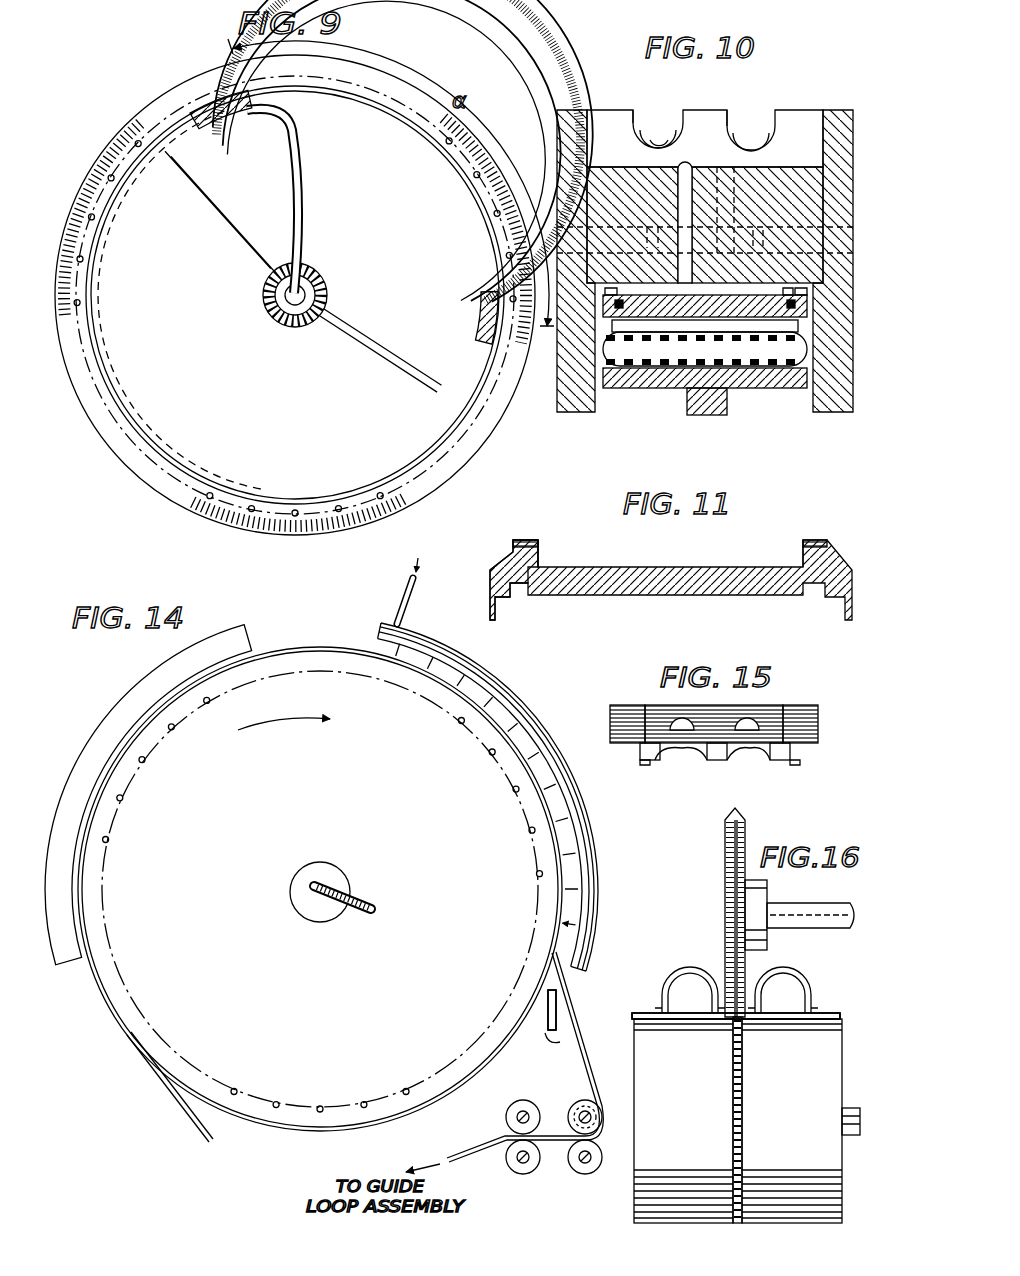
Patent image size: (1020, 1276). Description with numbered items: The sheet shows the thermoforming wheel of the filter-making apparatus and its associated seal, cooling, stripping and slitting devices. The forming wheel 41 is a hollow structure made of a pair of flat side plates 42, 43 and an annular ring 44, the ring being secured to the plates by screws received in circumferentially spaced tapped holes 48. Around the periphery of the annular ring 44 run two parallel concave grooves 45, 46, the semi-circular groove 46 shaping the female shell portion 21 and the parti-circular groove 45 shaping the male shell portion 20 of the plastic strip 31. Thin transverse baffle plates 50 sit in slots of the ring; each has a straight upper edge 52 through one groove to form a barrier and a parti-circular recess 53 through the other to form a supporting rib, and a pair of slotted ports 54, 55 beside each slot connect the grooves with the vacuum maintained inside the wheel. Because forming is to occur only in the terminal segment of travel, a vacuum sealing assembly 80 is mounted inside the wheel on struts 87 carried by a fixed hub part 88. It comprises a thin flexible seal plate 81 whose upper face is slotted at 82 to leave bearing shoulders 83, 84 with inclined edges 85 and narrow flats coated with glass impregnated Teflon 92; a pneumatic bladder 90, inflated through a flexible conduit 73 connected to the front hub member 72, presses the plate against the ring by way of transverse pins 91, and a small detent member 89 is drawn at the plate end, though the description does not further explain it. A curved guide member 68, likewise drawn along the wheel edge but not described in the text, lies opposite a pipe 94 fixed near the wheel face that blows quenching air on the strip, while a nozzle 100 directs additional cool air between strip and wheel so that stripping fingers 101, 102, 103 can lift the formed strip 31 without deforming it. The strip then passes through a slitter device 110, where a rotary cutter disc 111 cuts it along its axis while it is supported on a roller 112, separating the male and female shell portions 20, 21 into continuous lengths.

In FIG. 9, the annular ring 44 is at (165, 93).
In FIG. 10, the annular ring 44 is at (797, 110).
In FIG. 9, the seal plate 81 is at (252, 98).
In FIG. 10, the seal plate 81 is at (603, 312).
In FIG. 11, the seal plate 81 is at (722, 567).
In FIG. 9, the struts 87 is at (238, 208).
In FIG. 10, the struts 87 is at (705, 415).
In FIG. 9, the flexible conduit 73 is at (303, 219).
In FIG. 14, the flexible conduit 73 is at (352, 915).
In FIG. 9, the fixed hub part 88 is at (327, 285).
In FIG. 9, the pneumatic bladder 90 is at (482, 318).
In FIG. 10, the pneumatic bladder 90 is at (741, 390).
In FIG. 9, the vacuum sealing assembly 80 is at (158, 362).
In FIG. 10, the side plate 42 is at (569, 110).
In FIG. 15, the side plate 42 is at (818, 712).
In FIG. 10, the side plate 43 is at (836, 110).
In FIG. 15, the side plate 43 is at (610, 712).
In FIG. 10, the baffle plates 50 is at (626, 114).
In FIG. 10, the parti-circular recess 53 is at (668, 140).
In FIG. 10, the straight upper edge 52 is at (748, 128).
In FIG. 10, the groove 45 is at (640, 144).
In FIG. 10, the groove 46 is at (760, 144).
In FIG. 10, the slotted port 54 is at (689, 186).
In FIG. 10, the tapped holes 48 is at (652, 226).
In FIG. 10, the slotted port 55 is at (733, 219).
In FIG. 10, the inclined edges 85 is at (805, 290).
In FIG. 11, the inclined edges 85 is at (508, 557).
In FIG. 10, the bearing shoulder 83 is at (630, 292).
In FIG. 11, the bearing shoulder 83 is at (546, 557).
In FIG. 10, the bearing shoulder 84 is at (772, 292).
In FIG. 11, the bearing shoulder 84 is at (803, 560).
In FIG. 10, the detent 89 is at (797, 304).
In FIG. 10, the slot 82 is at (673, 300).
In FIG. 10, the transverse pins 91 is at (760, 333).
In FIG. 11, the glass impregnated Teflon layer 92 is at (522, 540).
In FIG. 14, the guide band 68 is at (128, 708).
In FIG. 14, the pipe 94 is at (497, 683).
In FIG. 14, the forming wheel 41 is at (333, 815).
In FIG. 14, the hub member 72 is at (306, 914).
In FIG. 14, the nozzle 100 is at (533, 1022).
In FIG. 14, the stripping finger 101 is at (560, 1013).
In FIG. 15, the stripping finger 101 is at (640, 758).
In FIG. 16, the stripping finger 101 is at (722, 976).
In FIG. 14, the stripping finger 102 is at (596, 993).
In FIG. 15, the stripping finger 102 is at (715, 761).
In FIG. 16, the stripping finger 102 is at (722, 988).
In FIG. 14, the stripping finger 103 is at (593, 1004).
In FIG. 15, the stripping finger 103 is at (790, 758).
In FIG. 16, the stripping finger 103 is at (722, 1000).
In FIG. 14, the rotary cutter disc 111 is at (505, 1117).
In FIG. 16, the rotary cutter disc 111 is at (740, 846).
In FIG. 14, the roller 112 is at (537, 1163).
In FIG. 16, the roller 112 is at (634, 1214).
In FIG. 14, the slitter device 110 is at (527, 1177).
In FIG. 16, the slitter device 110 is at (705, 925).
In FIG. 14, the plastic strip 31 is at (178, 1119).
In FIG. 16, the female shell portion 21 is at (689, 971).
In FIG. 16, the male shell portion 20 is at (790, 971).